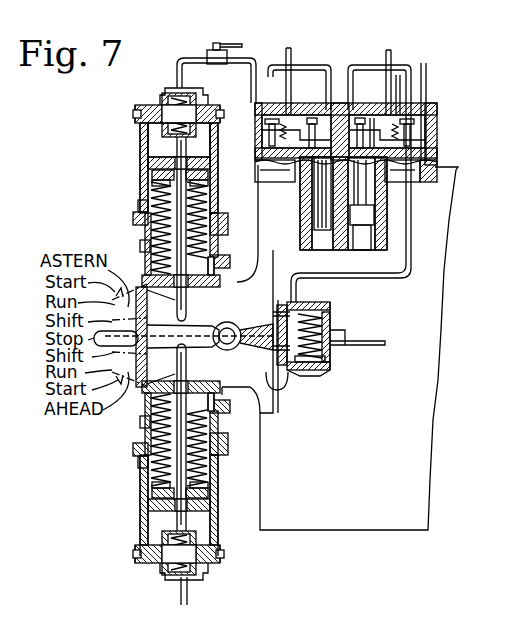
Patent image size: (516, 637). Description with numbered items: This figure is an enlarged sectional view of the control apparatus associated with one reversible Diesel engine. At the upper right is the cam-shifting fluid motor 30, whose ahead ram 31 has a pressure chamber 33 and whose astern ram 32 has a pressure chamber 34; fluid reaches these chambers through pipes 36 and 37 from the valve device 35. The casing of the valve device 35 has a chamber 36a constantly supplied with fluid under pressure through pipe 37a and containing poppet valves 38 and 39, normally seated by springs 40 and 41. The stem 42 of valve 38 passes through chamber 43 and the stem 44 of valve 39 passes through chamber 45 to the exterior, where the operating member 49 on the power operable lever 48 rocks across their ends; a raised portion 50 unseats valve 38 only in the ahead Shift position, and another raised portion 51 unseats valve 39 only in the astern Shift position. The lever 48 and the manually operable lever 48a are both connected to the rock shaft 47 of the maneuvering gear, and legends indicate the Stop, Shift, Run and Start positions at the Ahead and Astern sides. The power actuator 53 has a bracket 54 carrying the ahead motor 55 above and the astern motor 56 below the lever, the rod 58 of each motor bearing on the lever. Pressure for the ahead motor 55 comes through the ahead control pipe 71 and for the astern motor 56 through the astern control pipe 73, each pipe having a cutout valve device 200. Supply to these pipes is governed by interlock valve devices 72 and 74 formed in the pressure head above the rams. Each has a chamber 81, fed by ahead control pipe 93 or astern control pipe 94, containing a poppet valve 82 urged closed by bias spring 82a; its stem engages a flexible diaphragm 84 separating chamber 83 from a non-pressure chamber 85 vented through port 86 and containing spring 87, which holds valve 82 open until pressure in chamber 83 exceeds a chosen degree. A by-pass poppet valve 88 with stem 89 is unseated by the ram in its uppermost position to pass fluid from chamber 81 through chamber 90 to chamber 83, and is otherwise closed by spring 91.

The fluid motor 30 is at (387, 240).
The ram 31 is at (374, 215).
The ram 32 is at (314, 212).
The pressure chamber 33 is at (375, 200).
The pressure chamber 34 is at (312, 190).
The valve device 35 is at (330, 348).
The pipe 36 is at (375, 65).
The chamber 36a is at (343, 329).
The pipe 37 is at (305, 65).
The pipe 37a is at (372, 341).
The poppet valve 38 is at (316, 310).
The poppet valve 39 is at (318, 376).
The spring 40 is at (330, 306).
The spring 41 is at (325, 362).
The stem 42 is at (277, 265).
The chamber 43 is at (286, 305).
The stem 44 is at (268, 352).
The chamber 45 is at (288, 380).
The rock shaft 47 is at (227, 322).
The power operable lever 48 is at (208, 325).
The manually operable lever 48a is at (94, 338).
The operating member 49 is at (242, 350).
The raised portion 50 is at (268, 330).
The raised portion 51 is at (245, 326).
The power actuator 53 is at (150, 484).
The bracket 54 is at (241, 400).
The ahead motor 55 is at (148, 140).
The astern motor 56 is at (160, 570).
The rod 58 is at (155, 337).
The ahead control pipe 71 is at (176, 68).
The interlock valve device 72 is at (292, 122).
The astern control pipe 73 is at (190, 597).
The interlock valve device 74 is at (398, 80).
The chamber 81 is at (274, 118).
The poppet valve 82 is at (254, 122).
The bias spring 82a is at (254, 112).
The chamber 83 is at (255, 152).
The flexible diaphragm 84 is at (255, 164).
The non-pressure chamber 85 is at (282, 184).
The port 86 is at (405, 182).
The spring 87 is at (428, 182).
The by-pass poppet valve 88 is at (312, 118).
The stem 89 is at (373, 120).
The chamber 90 is at (340, 103).
The spring 91 is at (364, 122).
The ahead control pipe 93 is at (287, 50).
The astern control pipe 94 is at (388, 52).
The cutout valve device 200 is at (212, 52).